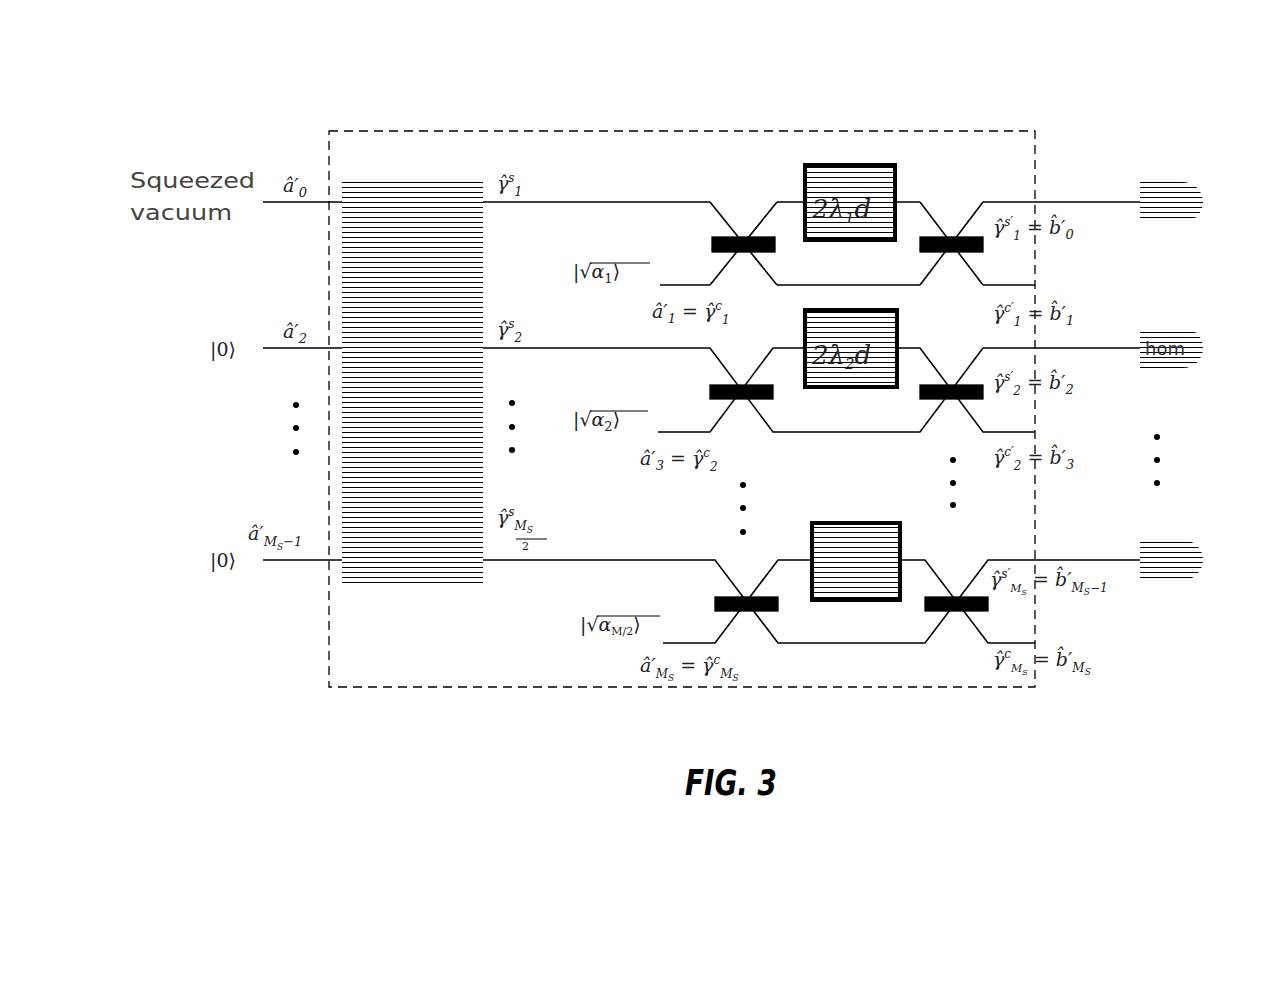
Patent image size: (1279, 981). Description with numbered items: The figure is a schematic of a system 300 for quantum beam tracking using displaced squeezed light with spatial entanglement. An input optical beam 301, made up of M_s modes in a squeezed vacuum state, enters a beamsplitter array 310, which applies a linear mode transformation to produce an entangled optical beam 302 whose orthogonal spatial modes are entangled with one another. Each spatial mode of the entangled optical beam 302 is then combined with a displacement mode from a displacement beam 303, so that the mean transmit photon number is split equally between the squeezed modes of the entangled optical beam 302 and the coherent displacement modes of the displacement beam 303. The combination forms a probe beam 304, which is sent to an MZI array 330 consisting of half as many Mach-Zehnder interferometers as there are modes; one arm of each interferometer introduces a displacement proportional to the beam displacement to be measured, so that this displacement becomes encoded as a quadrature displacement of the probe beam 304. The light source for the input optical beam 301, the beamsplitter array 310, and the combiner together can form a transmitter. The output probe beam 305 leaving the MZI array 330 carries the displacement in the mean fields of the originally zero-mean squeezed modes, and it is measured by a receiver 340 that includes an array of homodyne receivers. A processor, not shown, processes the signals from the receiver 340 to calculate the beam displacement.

The system 300 is at (216, 126).
The input optical beam 301 is at (269, 582).
The entangled optical beam 302 is at (511, 150).
The displacement beam 303 is at (623, 240).
The probe beam 304 is at (744, 210).
The output probe beam 305 is at (1103, 212).
The beamsplitter array 310 is at (402, 178).
The MZI array 330 is at (860, 672).
The receiver 340 is at (1171, 594).